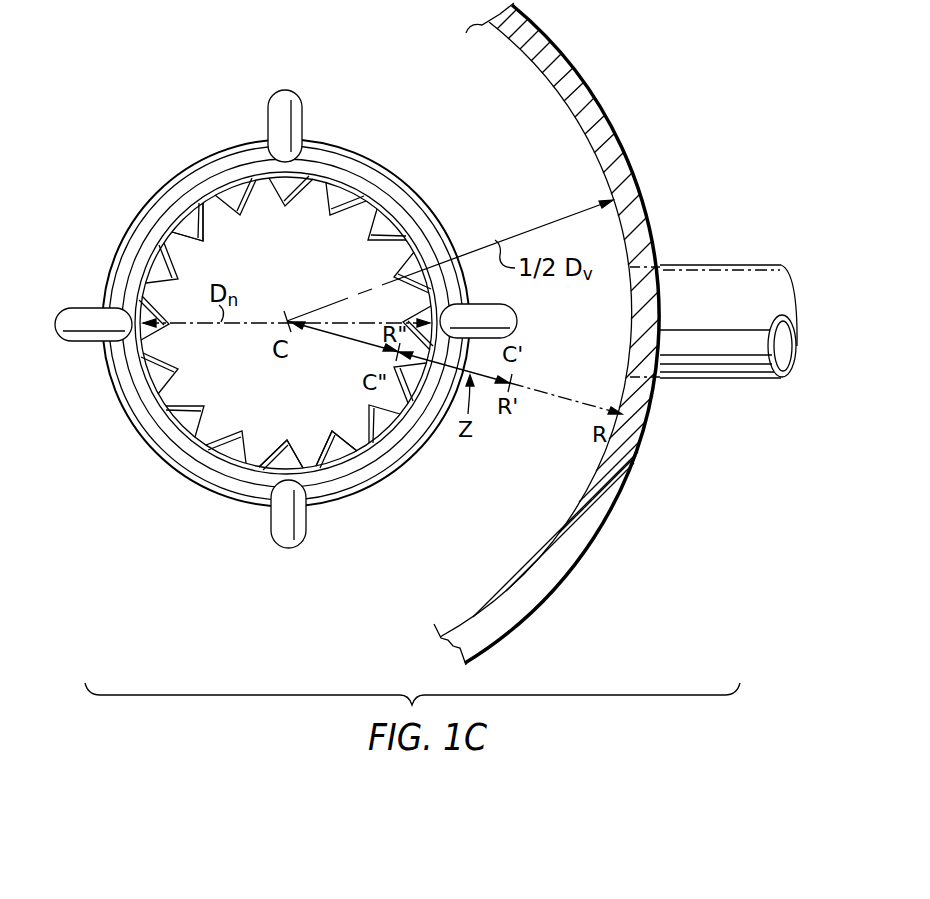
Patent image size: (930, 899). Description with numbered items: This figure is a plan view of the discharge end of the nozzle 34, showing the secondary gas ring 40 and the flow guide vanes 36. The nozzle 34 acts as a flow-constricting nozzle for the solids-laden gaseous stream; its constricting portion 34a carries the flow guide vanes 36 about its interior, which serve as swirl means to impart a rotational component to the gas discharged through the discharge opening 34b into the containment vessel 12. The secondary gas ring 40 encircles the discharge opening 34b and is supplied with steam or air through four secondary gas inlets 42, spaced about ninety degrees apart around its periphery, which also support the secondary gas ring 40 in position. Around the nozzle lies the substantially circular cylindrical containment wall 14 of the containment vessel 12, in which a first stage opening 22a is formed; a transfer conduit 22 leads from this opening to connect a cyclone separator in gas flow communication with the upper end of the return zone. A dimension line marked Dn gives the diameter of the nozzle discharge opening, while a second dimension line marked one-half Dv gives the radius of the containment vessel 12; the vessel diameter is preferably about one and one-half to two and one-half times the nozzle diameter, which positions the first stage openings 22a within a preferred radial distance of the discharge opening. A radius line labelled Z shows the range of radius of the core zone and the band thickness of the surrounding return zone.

The containment vessel 12 is at (650, 440).
The containment wall 14 is at (575, 548).
The transfer conduit 22 is at (717, 280).
The first stage opening 22a is at (640, 318).
The nozzle 34 is at (174, 177).
The constricting portion 34a is at (413, 213).
The discharge opening 34b is at (212, 198).
The flow guide vanes 36 is at (290, 196).
The secondary gas ring 40 is at (157, 423).
The secondary gas inlets 42 is at (284, 121).